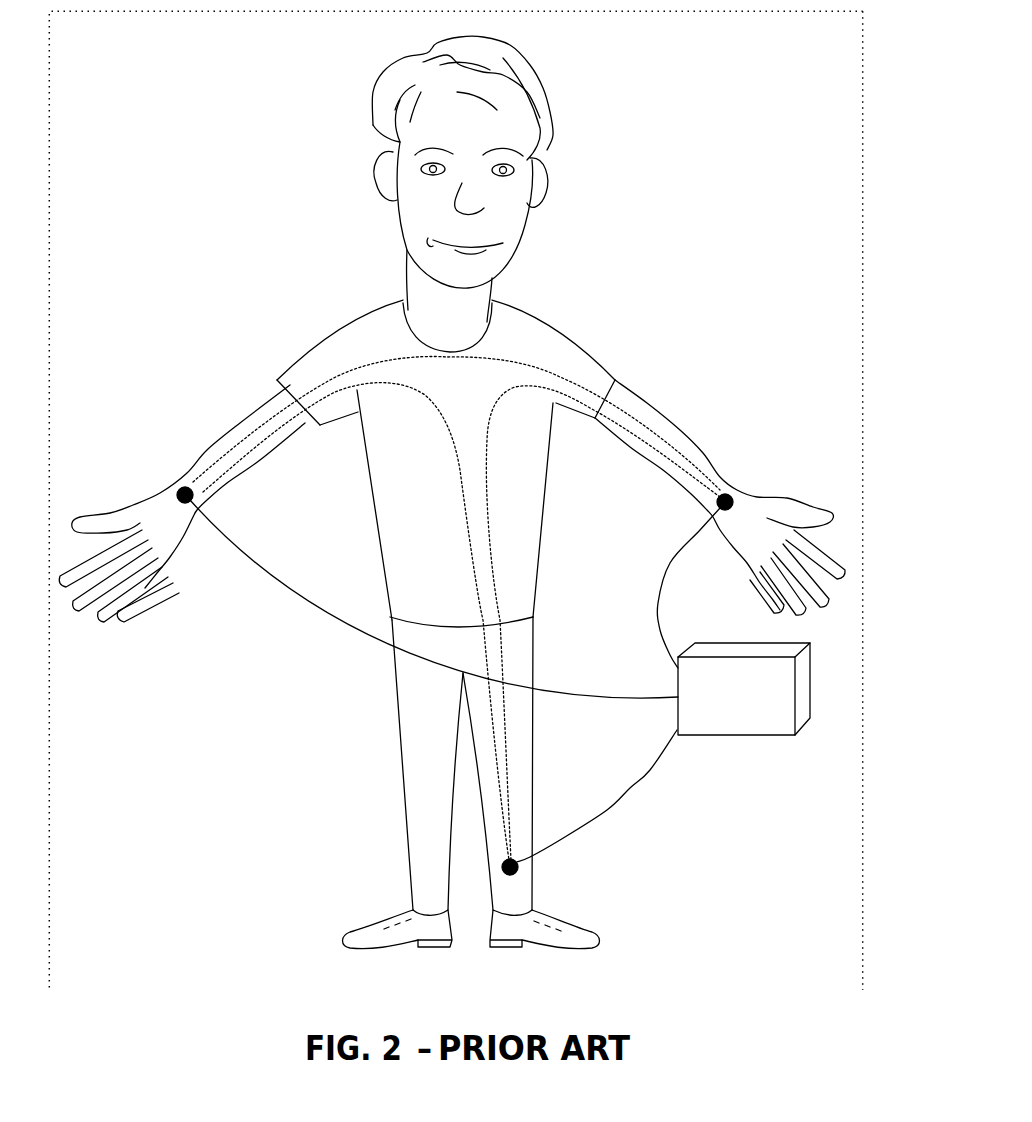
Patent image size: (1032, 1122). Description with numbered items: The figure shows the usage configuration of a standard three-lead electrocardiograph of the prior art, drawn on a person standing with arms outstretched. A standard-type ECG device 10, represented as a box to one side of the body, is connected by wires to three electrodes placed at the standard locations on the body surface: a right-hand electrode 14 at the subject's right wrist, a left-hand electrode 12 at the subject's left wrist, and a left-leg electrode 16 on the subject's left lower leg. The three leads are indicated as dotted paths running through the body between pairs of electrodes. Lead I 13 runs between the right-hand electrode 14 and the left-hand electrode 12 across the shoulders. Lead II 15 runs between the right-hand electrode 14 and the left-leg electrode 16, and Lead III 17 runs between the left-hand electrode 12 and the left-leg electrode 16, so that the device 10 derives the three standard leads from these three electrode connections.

The ECG device 10 is at (800, 710).
The left-hand electrode 12 is at (727, 483).
The Lead I 13 is at (570, 370).
The right-hand electrode 14 is at (184, 485).
The Lead II 15 is at (425, 412).
The left-leg electrode 16 is at (520, 867).
The Lead III 17 is at (490, 455).